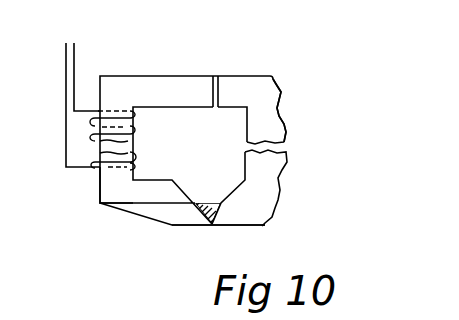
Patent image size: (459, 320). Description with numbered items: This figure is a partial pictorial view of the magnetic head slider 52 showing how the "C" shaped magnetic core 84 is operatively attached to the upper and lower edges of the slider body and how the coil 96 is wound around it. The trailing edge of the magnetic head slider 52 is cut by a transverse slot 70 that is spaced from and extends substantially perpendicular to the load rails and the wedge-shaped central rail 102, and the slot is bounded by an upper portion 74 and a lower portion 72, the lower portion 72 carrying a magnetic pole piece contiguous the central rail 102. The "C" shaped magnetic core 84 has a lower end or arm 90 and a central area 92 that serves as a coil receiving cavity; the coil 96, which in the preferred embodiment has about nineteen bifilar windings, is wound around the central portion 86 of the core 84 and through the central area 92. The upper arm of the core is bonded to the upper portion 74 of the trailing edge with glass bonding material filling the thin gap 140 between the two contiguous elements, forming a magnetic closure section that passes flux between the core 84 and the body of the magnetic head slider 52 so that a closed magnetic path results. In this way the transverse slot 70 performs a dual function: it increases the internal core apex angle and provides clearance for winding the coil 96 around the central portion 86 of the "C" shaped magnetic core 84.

The magnetic head slider 52 is at (283, 107).
The transverse slot 70 is at (233, 128).
The lower portion 72 is at (243, 218).
The upper portion 74 is at (243, 85).
The "C" shaped magnetic core 84 is at (117, 68).
The central portion 86 is at (114, 158).
The lower end or arm 90 is at (118, 192).
The central area 92 is at (166, 142).
The coil 96 is at (65, 65).
The central rail 102 is at (168, 221).
The thin gap 140 is at (216, 78).